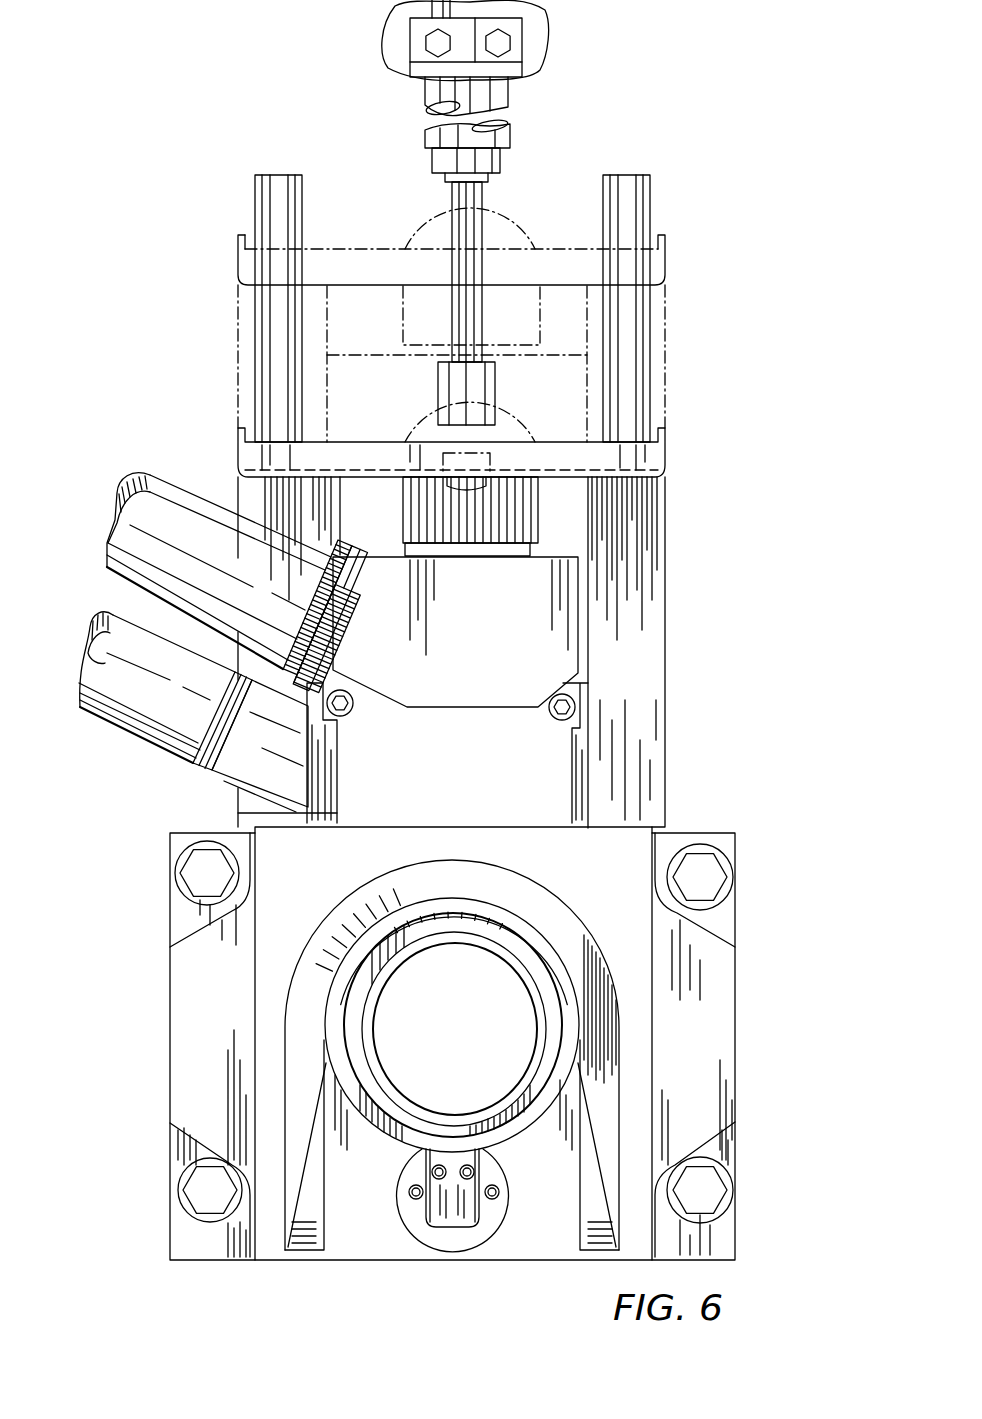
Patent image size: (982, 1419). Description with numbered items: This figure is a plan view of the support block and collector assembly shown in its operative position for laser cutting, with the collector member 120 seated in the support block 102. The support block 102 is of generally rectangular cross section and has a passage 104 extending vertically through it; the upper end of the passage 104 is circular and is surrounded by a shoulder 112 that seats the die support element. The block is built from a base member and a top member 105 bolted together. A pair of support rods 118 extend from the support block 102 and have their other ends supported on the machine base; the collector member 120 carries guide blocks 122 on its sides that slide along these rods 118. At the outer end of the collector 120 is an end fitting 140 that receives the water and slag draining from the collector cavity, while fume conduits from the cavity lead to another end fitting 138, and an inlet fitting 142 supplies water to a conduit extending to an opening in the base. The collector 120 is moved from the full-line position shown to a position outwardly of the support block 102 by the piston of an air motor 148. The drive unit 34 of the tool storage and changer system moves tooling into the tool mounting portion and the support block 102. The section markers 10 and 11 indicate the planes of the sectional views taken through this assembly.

The air motor 148 is at (538, 45).
The support rods 118 is at (268, 357).
The end fitting 138 is at (108, 553).
The inlet fitting 142 is at (92, 623).
The end fitting 140 is at (513, 543).
The guide blocks 122 is at (640, 715).
The collector member 120 is at (592, 766).
The drive unit 34 is at (512, 757).
The top member 105 is at (605, 871).
The support block 102 is at (740, 925).
The passage 104 is at (535, 1018).
The shoulder 112 is at (575, 1050).
The section line 10- 10 is at (475, 788).
The section line 11- 11 is at (251, 819).